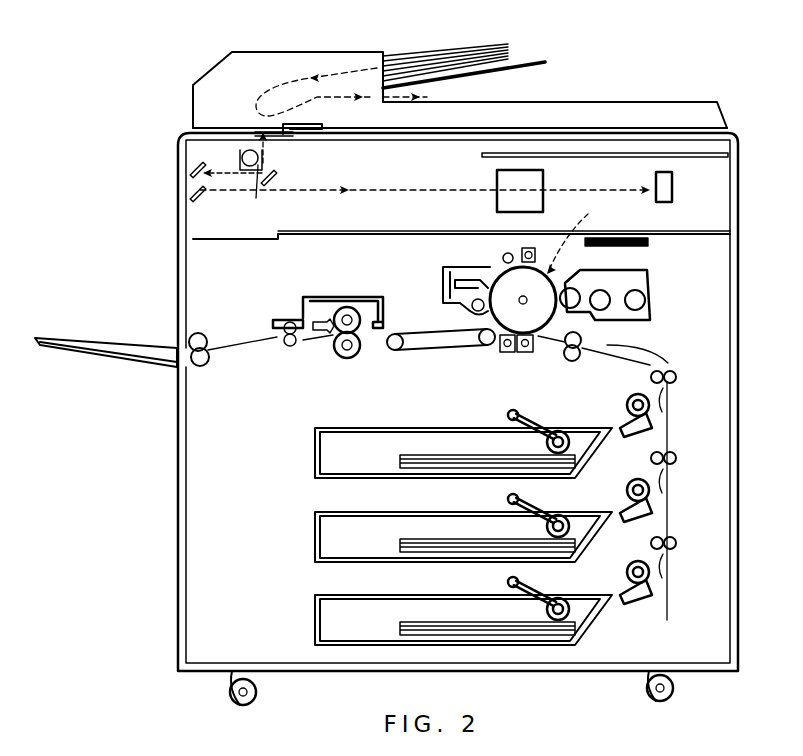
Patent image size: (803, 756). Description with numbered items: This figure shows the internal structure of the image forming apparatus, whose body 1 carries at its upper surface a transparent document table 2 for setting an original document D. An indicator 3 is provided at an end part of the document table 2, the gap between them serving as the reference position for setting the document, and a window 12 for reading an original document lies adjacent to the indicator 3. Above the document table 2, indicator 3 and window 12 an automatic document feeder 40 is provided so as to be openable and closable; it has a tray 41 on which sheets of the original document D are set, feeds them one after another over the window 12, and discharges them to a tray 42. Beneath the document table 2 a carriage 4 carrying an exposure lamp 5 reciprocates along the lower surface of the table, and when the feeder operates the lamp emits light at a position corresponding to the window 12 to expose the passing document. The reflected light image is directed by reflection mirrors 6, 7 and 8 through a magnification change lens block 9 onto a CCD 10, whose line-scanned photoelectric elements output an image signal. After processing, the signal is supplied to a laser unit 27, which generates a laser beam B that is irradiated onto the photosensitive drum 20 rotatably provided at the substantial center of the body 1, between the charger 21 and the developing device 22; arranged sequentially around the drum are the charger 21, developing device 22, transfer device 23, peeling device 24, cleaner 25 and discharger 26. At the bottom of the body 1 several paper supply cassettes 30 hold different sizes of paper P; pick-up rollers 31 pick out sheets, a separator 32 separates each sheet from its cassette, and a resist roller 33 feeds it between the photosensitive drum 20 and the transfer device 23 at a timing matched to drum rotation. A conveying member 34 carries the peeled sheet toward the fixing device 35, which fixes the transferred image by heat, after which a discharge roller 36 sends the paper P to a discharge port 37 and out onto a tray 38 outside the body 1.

The body 1 is at (717, 674).
The document table 2 is at (476, 139).
The indicator 3 is at (318, 123).
The carriage 4 is at (258, 166).
The exposure lamp 5 is at (264, 155).
The reflection mirror 6 is at (277, 180).
The reflection mirror 7 is at (190, 170).
The reflection mirror 8 is at (207, 198).
The magnification change lens block 9 is at (545, 178).
The CCD 10 is at (673, 198).
The window 12 is at (286, 136).
The photosensitive drum 20 is at (498, 270).
The charger 21 is at (536, 250).
The developing device 22 is at (642, 270).
The transfer device 23 is at (524, 353).
The peeling device 24 is at (505, 352).
The cleaner 25 is at (446, 280).
The discharger 26 is at (504, 254).
The laser unit 27 is at (650, 242).
The paper supply cassette 30 is at (316, 444).
The pick-up roller 31 is at (575, 428).
The separator 32 is at (634, 396).
The resist roller 33 is at (572, 362).
The conveying belt 34 is at (422, 330).
The fixing device 35 is at (337, 297).
The discharge roller 36 is at (203, 333).
The discharge port 37 is at (198, 368).
The tray 38 is at (92, 359).
The automatic document feeder 40 is at (332, 52).
The tray 41 is at (540, 58).
The tray 42 is at (625, 100).
The laser beam B is at (575, 232).
The original document D is at (476, 51).
The paper P is at (412, 455).